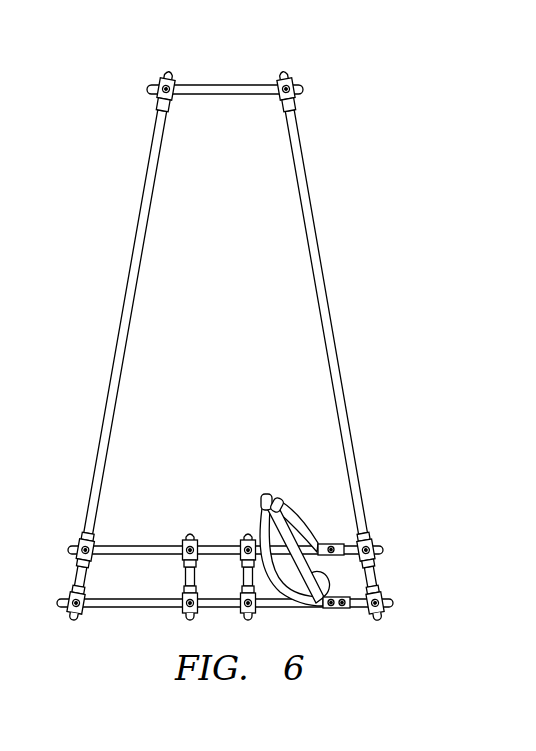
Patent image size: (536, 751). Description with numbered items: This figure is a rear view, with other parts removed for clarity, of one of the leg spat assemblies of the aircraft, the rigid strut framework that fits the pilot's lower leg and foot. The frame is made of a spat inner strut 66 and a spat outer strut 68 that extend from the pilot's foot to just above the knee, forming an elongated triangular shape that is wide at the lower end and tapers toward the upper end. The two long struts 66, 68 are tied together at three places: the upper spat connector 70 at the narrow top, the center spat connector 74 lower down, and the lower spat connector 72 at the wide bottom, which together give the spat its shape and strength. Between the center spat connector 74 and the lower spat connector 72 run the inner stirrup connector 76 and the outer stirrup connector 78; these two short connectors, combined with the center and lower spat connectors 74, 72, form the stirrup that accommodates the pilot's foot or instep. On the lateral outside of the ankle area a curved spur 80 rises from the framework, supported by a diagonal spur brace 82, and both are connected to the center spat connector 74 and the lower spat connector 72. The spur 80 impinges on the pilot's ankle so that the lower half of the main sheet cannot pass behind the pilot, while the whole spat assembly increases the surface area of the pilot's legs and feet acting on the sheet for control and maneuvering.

The spat inner strut 66 is at (159, 63).
The spat outer strut 68 is at (285, 63).
The upper spat connector 70 is at (304, 90).
The lower spat connector 72 is at (394, 603).
The center spat connector 74 is at (384, 551).
The inner stirrup connector 76 is at (181, 548).
The outer stirrup connector 78 is at (233, 548).
The spur 80 is at (302, 528).
The spur brace 82 is at (314, 610).